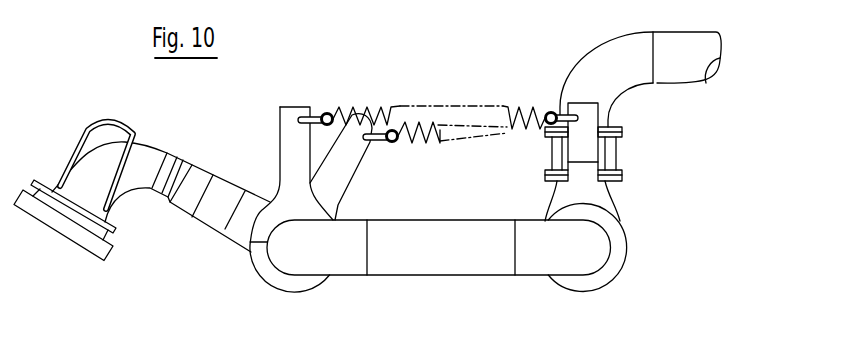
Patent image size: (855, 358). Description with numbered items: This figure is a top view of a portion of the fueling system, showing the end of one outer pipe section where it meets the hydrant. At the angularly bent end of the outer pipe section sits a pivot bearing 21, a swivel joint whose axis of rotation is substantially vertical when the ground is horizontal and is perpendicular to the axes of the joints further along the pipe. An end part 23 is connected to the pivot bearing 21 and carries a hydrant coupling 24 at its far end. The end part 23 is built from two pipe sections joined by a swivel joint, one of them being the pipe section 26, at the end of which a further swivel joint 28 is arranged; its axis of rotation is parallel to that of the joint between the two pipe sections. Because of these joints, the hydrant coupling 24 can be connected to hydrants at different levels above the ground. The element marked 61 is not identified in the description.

The pivot bearing 21 is at (605, 155).
The end part 23 is at (291, 232).
The hydrant coupling 24 is at (142, 240).
The pipe section 26 is at (468, 252).
The swivel joint 28 is at (369, 232).
The cable (phantom) 61 is at (504, 121).